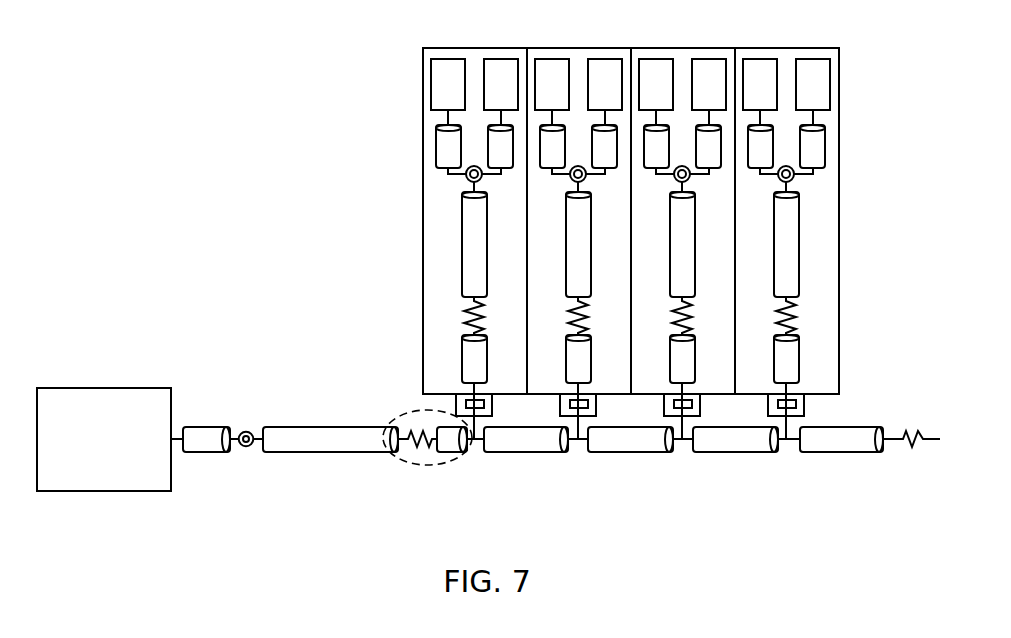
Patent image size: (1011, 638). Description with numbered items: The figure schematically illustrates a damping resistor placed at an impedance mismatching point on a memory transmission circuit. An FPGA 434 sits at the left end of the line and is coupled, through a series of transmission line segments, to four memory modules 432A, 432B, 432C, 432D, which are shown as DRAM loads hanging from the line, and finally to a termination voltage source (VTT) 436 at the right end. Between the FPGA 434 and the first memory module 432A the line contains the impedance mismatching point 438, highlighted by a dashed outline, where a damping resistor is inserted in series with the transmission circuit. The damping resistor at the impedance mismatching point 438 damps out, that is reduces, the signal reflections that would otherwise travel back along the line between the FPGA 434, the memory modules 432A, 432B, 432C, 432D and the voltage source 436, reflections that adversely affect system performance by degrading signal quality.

The memory module 432A is at (475, 48).
The memory module 432B is at (578, 48).
The memory module 432C is at (683, 48).
The memory module 432D is at (790, 48).
The FPGA 434 is at (103, 388).
The voltage source (VTT) 436 is at (956, 425).
The impedance mismatching point 438 is at (427, 466).